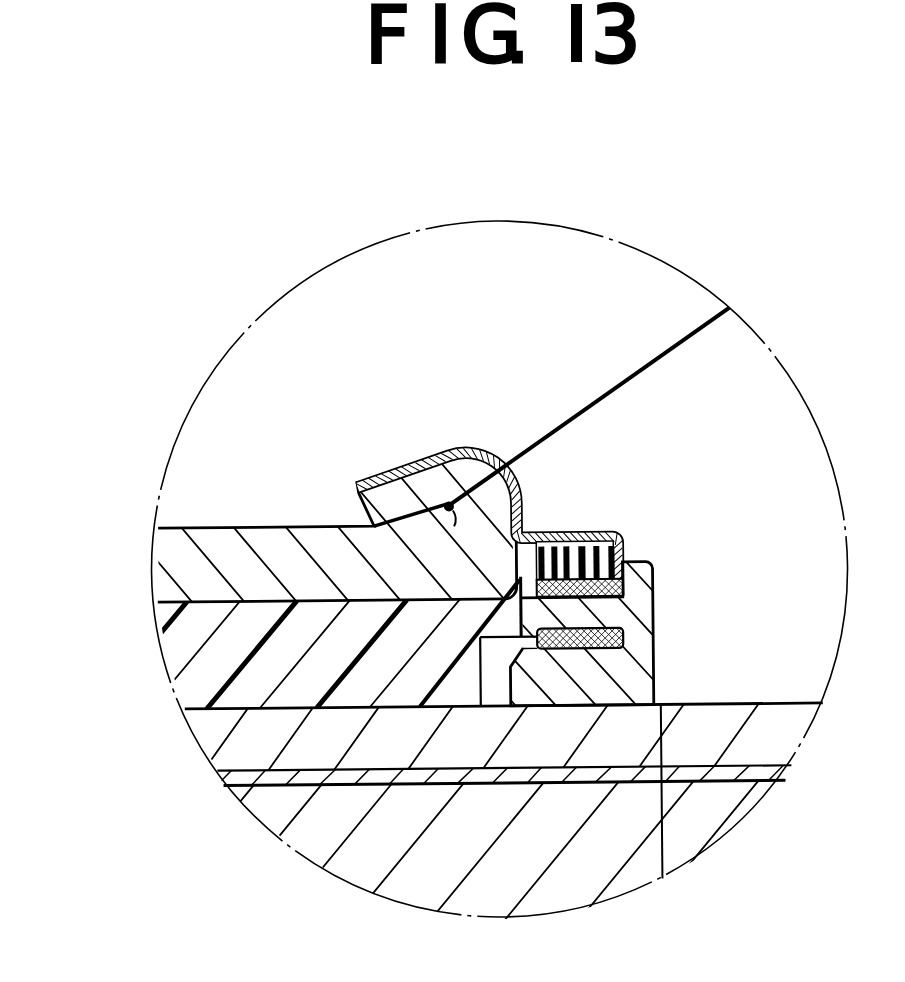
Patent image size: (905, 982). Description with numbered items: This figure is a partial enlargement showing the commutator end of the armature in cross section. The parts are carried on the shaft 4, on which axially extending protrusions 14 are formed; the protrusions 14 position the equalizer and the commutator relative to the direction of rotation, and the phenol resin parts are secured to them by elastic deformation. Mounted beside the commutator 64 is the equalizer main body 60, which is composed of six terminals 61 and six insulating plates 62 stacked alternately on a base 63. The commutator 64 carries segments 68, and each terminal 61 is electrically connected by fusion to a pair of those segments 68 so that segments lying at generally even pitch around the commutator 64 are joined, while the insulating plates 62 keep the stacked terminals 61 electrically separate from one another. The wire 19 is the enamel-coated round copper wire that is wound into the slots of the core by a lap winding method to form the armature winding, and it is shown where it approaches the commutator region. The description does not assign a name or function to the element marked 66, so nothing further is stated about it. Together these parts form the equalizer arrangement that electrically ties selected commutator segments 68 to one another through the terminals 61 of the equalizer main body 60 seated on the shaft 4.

The shaft 4 is at (353, 843).
The protrusions 14 is at (222, 777).
The wire 19 is at (610, 388).
The equalizer main body 60 is at (635, 628).
The terminals 61 is at (397, 467).
The insulating plates 62 is at (538, 537).
The base 63 is at (634, 677).
The commutator 64 is at (178, 647).
The dust lip 66 is at (450, 470).
The segments 68 is at (277, 550).